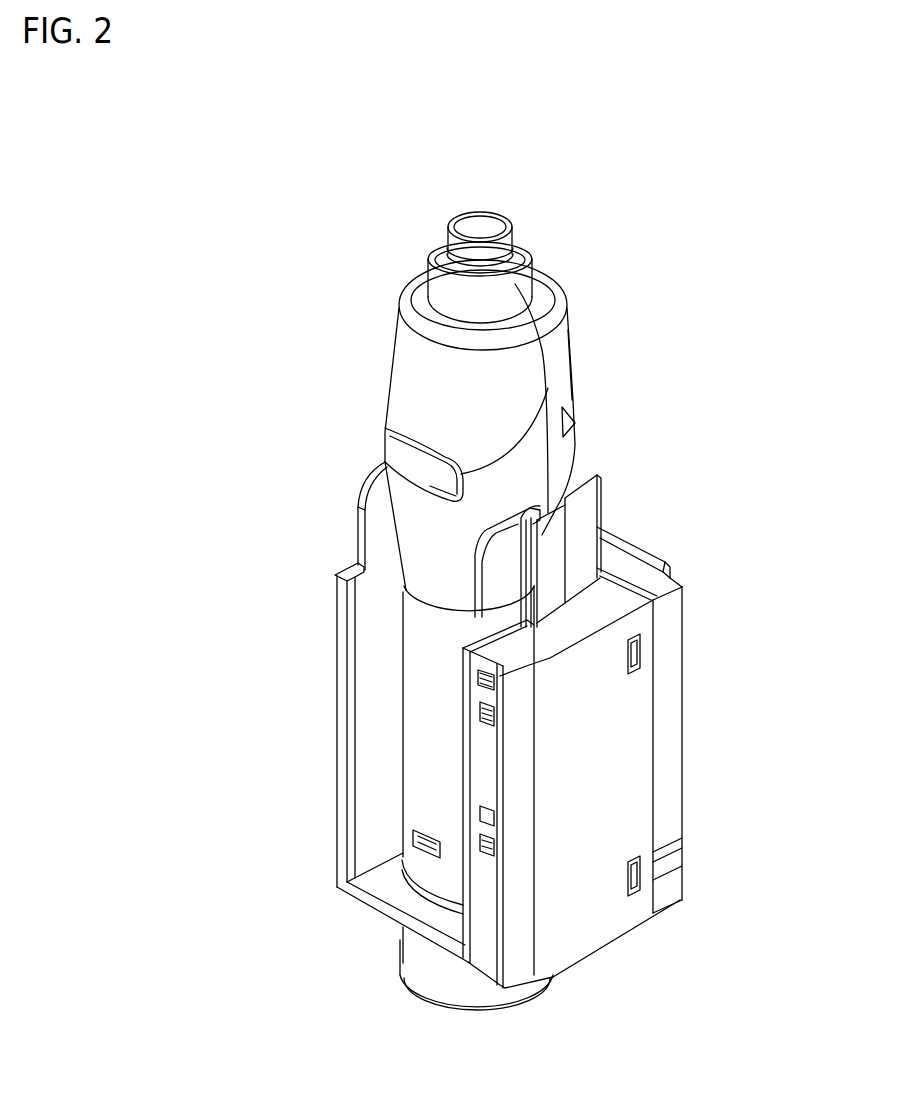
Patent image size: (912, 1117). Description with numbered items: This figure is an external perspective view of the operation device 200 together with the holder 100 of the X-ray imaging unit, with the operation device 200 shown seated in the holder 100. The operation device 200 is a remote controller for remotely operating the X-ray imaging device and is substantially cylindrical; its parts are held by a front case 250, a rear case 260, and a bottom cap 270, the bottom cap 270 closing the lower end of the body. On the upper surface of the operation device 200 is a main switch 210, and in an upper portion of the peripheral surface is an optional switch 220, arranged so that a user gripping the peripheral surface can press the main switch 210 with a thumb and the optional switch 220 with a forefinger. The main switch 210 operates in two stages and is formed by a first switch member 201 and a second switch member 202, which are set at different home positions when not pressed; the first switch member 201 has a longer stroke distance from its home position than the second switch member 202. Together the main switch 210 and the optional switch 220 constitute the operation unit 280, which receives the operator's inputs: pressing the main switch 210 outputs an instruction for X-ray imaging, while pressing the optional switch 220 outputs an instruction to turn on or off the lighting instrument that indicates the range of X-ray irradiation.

The holder 100 is at (694, 698).
The operation device 200 is at (596, 356).
The first switch member 201 is at (493, 226).
The second switch member 202 is at (514, 296).
The main switch 210 is at (625, 204).
The optional switch 220 is at (552, 392).
The front case 250 is at (386, 358).
The rear case 260 is at (574, 383).
The bottom cap 270 is at (425, 996).
The operation unit 280 is at (687, 210).